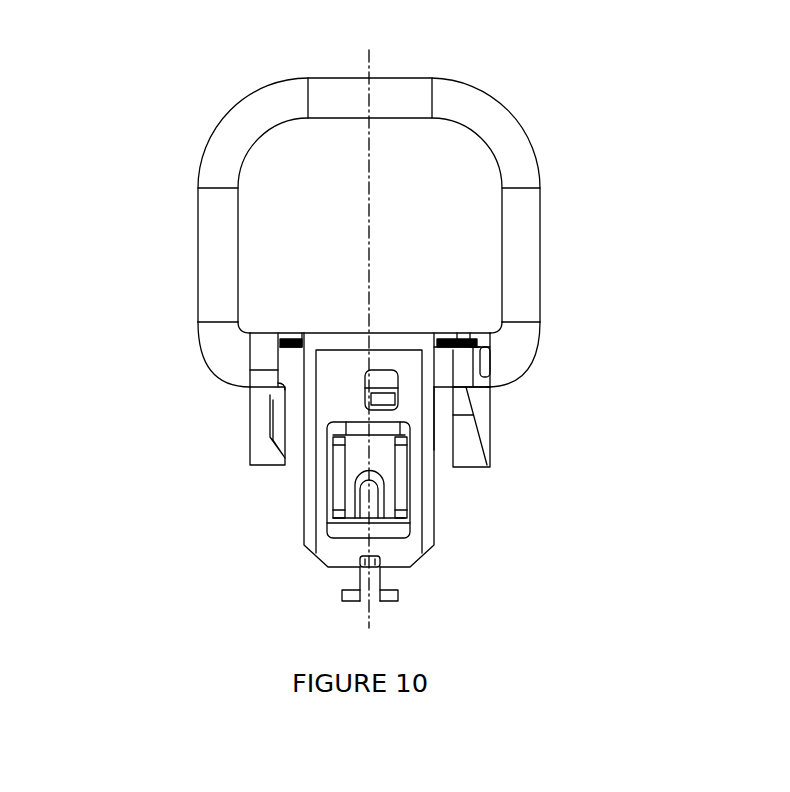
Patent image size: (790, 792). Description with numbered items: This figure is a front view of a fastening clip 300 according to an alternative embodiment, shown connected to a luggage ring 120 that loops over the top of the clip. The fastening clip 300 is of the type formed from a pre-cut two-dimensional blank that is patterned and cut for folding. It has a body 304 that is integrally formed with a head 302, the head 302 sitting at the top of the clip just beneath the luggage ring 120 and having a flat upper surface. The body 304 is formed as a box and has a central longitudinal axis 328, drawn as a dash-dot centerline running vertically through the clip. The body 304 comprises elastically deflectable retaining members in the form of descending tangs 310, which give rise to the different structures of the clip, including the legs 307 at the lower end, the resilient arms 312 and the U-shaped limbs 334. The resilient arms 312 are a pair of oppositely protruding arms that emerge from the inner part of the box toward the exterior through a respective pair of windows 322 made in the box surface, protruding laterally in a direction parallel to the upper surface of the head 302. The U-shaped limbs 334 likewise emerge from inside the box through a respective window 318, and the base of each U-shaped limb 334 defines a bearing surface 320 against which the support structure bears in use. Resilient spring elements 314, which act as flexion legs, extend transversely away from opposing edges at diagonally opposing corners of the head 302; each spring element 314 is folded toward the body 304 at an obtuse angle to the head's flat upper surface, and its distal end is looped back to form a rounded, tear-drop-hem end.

The luggage ring 120 is at (508, 146).
The fastening clip 300 is at (523, 480).
The head 302 is at (342, 327).
The body 304 is at (277, 515).
The legs 307 is at (351, 578).
The descending tangs 310 is at (350, 595).
The resilient arms 312 is at (389, 392).
The resilient spring elements 314 is at (268, 382).
The window 318 is at (407, 457).
The bearing surface 320 is at (360, 440).
The windows 322 is at (386, 381).
The longitudinal axis 328 is at (371, 133).
The U-shaped limbs 334 is at (327, 473).